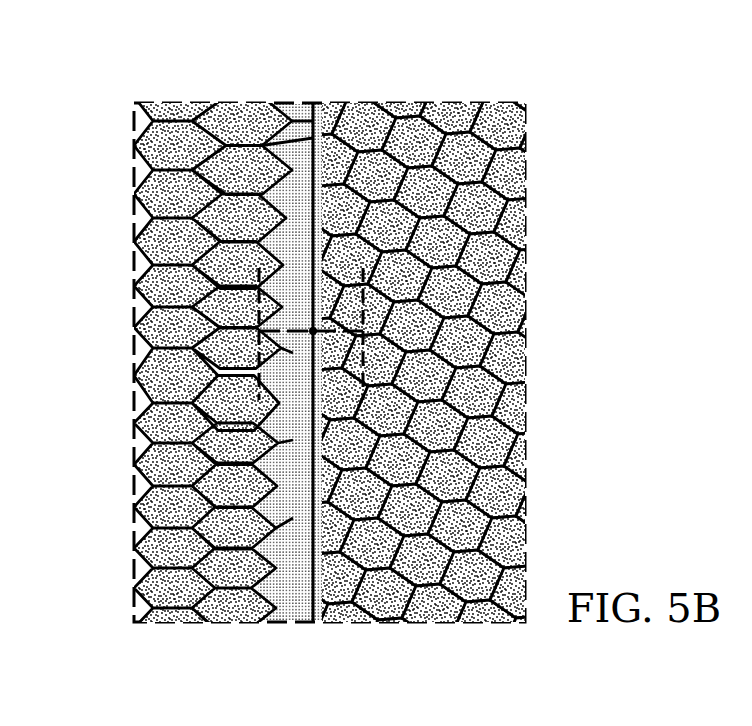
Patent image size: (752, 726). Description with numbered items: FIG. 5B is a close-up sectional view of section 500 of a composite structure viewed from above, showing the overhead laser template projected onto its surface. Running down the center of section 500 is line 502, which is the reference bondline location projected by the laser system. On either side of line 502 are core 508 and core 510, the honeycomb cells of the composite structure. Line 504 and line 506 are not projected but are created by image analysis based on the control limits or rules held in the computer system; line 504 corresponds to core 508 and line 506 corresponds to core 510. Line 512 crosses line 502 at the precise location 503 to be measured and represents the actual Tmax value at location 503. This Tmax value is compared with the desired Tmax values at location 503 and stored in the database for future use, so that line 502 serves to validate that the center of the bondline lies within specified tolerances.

The section 500 is at (325, 364).
The line 502 is at (309, 593).
The location 503 is at (308, 324).
The line 504 is at (258, 308).
The line 506 is at (365, 357).
The core 508 is at (188, 116).
The core 510 is at (498, 573).
The line 512 is at (340, 332).